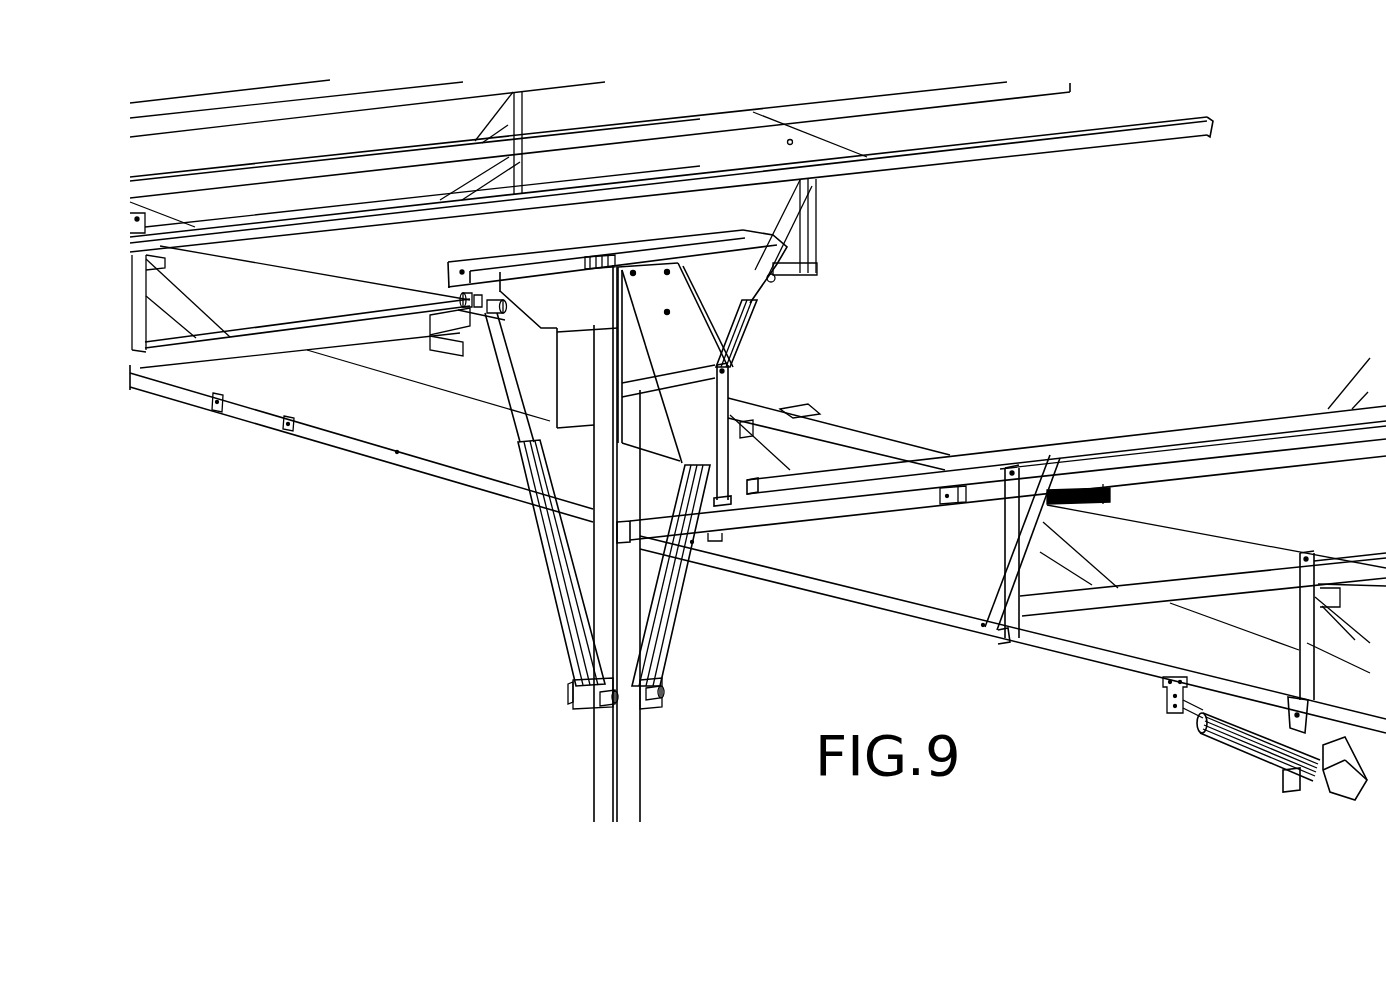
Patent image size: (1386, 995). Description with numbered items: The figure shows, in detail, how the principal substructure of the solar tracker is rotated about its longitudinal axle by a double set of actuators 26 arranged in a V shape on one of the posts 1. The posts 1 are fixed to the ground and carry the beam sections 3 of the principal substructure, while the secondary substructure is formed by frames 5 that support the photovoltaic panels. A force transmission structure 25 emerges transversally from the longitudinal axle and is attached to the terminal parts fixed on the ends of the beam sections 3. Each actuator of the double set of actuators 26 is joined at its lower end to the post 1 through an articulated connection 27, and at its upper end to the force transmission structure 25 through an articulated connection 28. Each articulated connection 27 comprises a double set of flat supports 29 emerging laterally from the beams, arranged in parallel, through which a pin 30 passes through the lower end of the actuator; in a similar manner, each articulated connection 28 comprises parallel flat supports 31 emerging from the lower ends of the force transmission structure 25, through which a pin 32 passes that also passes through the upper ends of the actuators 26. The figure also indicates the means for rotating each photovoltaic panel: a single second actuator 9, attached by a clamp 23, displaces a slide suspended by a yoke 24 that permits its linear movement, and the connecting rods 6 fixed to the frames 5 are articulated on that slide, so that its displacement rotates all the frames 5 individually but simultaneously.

The post 1 is at (632, 738).
The beam section 3 is at (842, 430).
The frame 5 is at (1050, 442).
The connecting rod 6 is at (1003, 578).
The second actuator 9 is at (1207, 753).
The clamp 23 is at (1290, 783).
The yoke 24 is at (1297, 697).
The force transmission structure 25 is at (757, 305).
The double set of actuators 26 is at (583, 622).
The articulated connection 27 is at (583, 683).
The articulated connection 28 is at (455, 298).
The flat supports 29 is at (653, 702).
The pin 30 is at (612, 703).
The flat supports 31 is at (492, 318).
The pin 32 is at (500, 312).